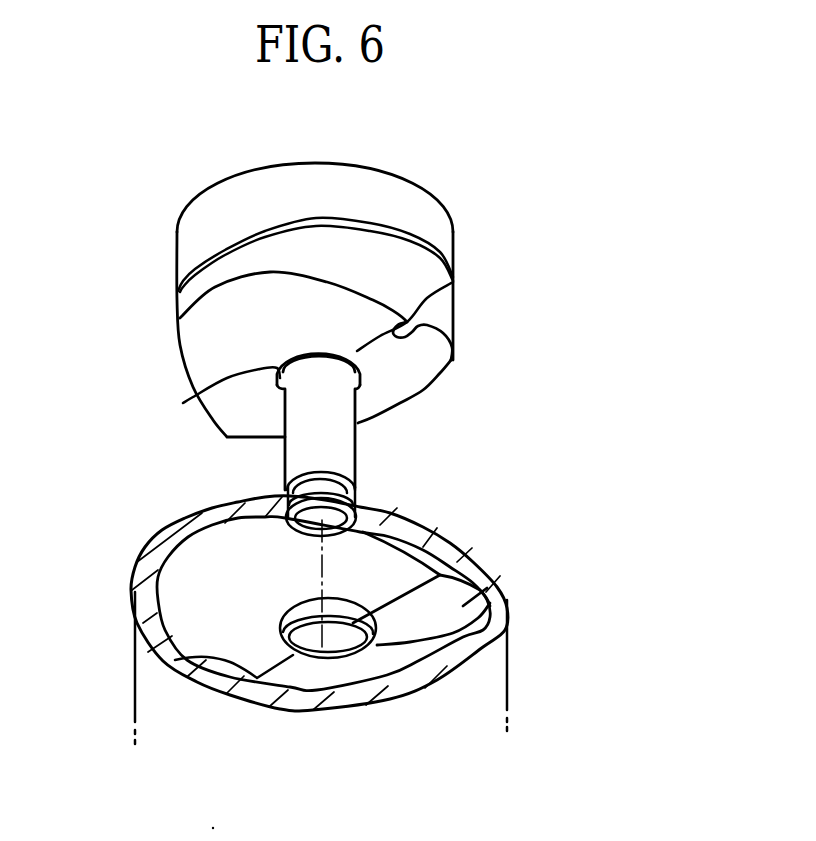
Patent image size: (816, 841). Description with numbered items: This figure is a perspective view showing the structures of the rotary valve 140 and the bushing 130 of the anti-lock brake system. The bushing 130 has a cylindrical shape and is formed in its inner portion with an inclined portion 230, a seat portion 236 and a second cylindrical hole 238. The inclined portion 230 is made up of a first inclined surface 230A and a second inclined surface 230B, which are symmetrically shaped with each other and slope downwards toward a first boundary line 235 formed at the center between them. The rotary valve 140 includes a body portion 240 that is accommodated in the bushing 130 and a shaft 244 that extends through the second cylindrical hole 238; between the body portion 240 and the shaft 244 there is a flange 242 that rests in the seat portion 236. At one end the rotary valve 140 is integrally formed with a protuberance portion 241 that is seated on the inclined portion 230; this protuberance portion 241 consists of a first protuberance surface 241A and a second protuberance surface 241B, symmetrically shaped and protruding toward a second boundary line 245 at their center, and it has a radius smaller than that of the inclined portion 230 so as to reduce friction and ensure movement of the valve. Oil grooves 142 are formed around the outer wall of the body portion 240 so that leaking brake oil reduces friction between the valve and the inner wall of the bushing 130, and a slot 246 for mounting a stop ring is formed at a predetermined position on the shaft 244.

The bushing 130 is at (480, 690).
The rotary valve 140 is at (410, 210).
The oil grooves 142 is at (283, 222).
The inclined portion 230 is at (527, 568).
The first inclined surface 230A is at (500, 567).
The second inclined surface 230B is at (443, 527).
The first boundary line 235 is at (175, 660).
The seat portion 236 is at (495, 623).
The second cylindrical hole 238 is at (339, 632).
The body portion 240 is at (455, 231).
The protuberance portion 241 is at (496, 372).
The first protuberance surface 241A is at (434, 352).
The second protuberance surface 241B is at (432, 382).
The flange 242 is at (183, 403).
The shaft 244 is at (342, 440).
The second boundary line 245 is at (453, 282).
The slot 246 is at (287, 487).